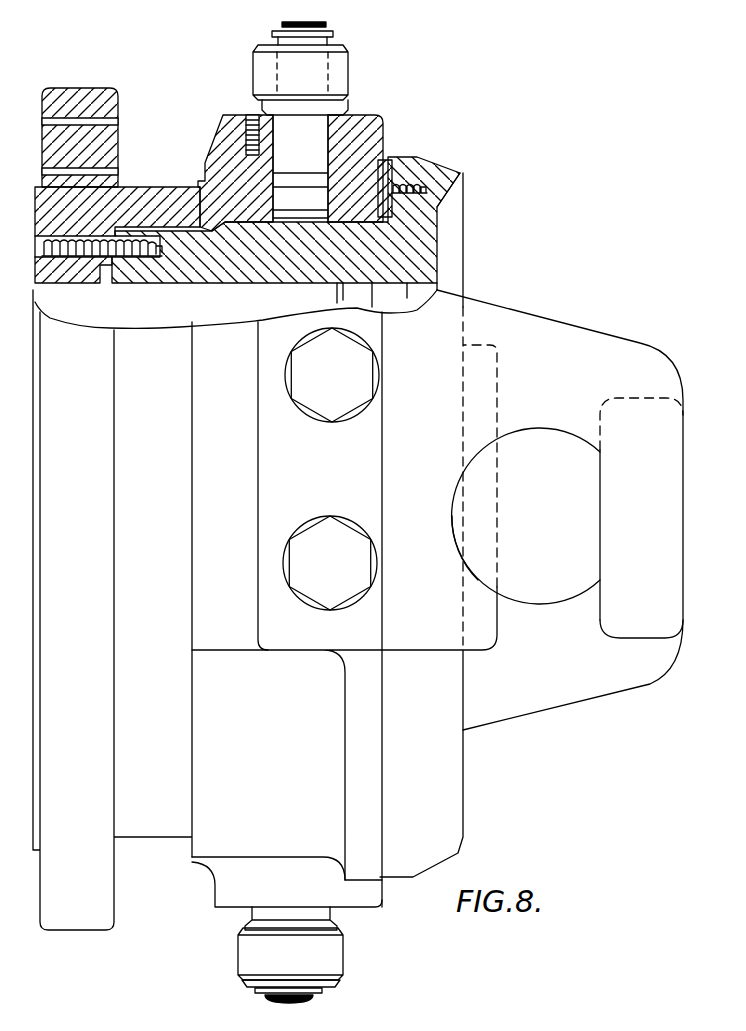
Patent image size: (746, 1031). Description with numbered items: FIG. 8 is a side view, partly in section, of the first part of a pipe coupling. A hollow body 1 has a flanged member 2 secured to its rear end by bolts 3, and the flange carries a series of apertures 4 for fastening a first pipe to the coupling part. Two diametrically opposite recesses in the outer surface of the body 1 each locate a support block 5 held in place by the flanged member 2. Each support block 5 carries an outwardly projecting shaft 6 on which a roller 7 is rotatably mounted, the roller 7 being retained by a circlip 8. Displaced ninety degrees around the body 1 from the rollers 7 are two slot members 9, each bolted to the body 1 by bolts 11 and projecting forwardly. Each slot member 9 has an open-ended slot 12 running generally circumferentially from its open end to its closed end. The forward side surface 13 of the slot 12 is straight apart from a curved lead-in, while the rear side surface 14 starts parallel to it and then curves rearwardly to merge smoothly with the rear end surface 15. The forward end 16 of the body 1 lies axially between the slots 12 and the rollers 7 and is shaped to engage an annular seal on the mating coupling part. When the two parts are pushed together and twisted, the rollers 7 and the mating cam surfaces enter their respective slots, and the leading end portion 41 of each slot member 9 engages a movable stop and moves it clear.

The hollow body 1 is at (193, 273).
The flanged member 2 is at (113, 190).
The bolts 3 is at (88, 262).
The apertures 4 is at (112, 138).
The support block 5 is at (218, 155).
The shaft 6 is at (318, 22).
The roller 7 is at (262, 66).
The circlip 8 is at (333, 34).
The slot member 9 is at (543, 332).
The bolts 11 is at (313, 533).
The slot 12 is at (521, 622).
The forward side surface 13 is at (600, 512).
The rear side surface 14 is at (474, 567).
The rear end surface 15 is at (560, 432).
The forward end 16 is at (442, 227).
The leading end portion 41 is at (660, 635).